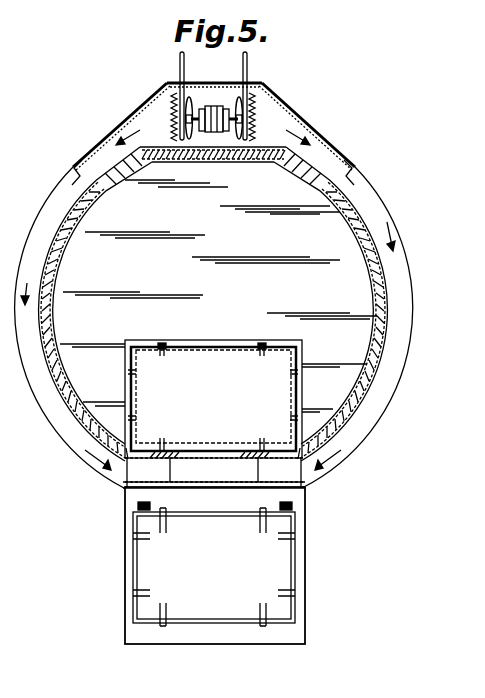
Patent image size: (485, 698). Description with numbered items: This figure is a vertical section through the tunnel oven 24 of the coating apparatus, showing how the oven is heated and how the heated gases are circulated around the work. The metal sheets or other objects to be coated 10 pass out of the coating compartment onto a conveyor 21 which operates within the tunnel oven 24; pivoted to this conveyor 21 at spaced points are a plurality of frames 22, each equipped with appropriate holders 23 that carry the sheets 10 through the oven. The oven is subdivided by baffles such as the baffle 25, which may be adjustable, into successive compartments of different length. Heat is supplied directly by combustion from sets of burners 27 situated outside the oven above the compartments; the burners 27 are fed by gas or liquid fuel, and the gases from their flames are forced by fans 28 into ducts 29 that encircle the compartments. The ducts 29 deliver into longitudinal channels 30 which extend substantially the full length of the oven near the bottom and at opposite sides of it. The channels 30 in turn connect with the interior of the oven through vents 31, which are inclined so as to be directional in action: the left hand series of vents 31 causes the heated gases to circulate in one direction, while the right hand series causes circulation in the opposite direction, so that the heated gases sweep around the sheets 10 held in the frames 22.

The metal sheets 10 is at (163, 372).
The conveyor 21 is at (303, 455).
The frames 22 is at (200, 345).
The holders 23 is at (257, 345).
The tunnel oven 24 is at (375, 385).
The baffle 25 is at (357, 340).
The burners 27 is at (174, 113).
The fans 28 is at (234, 97).
The ducts 29 is at (85, 163).
The longitudinal channels 30 is at (133, 473).
The vents 31 is at (174, 448).